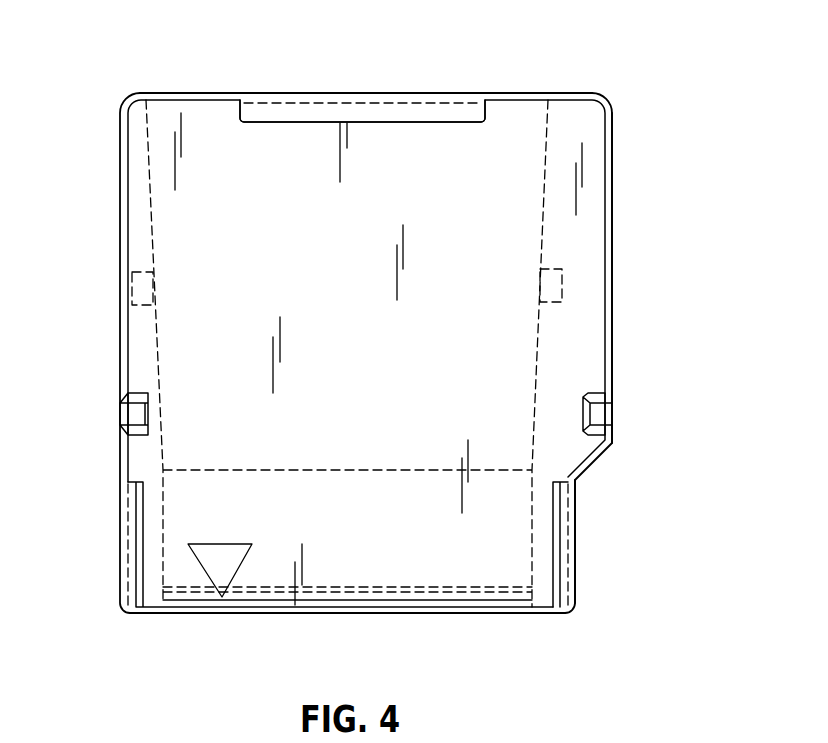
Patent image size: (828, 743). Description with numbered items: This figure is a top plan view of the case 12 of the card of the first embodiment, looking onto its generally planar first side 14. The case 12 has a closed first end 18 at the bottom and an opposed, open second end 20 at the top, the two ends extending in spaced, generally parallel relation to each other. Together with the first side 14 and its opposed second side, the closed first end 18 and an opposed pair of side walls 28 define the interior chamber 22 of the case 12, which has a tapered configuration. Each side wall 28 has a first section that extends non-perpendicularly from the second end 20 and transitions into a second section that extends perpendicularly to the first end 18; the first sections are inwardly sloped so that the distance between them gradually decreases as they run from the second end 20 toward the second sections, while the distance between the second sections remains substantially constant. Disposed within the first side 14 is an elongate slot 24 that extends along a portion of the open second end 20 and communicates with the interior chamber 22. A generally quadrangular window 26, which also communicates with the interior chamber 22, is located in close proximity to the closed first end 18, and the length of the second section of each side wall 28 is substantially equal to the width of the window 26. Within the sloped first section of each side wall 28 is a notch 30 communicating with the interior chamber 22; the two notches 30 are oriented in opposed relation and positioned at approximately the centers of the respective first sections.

The case 12 is at (618, 413).
The first (top) side 14 is at (574, 118).
The closed first end 18 is at (412, 613).
The open second end 20 is at (186, 93).
The interior chamber 22 is at (511, 151).
The elongate slot 24 is at (273, 107).
The window 26 is at (525, 537).
The side walls 28 is at (530, 396).
The notch 30 is at (658, 292).